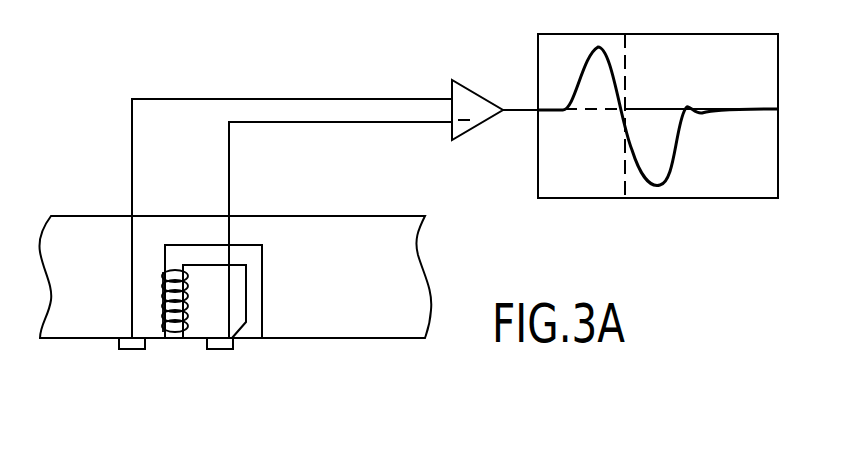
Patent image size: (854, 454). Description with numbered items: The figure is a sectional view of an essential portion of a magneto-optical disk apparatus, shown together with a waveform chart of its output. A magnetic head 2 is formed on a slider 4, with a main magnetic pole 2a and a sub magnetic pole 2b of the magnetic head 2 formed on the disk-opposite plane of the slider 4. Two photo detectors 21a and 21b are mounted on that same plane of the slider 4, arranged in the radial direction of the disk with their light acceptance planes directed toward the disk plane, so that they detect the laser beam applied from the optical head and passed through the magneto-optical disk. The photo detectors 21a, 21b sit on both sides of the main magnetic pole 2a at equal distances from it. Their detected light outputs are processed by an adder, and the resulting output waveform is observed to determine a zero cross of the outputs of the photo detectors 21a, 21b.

The magnetic head 2 is at (209, 250).
The main magnetic pole 2a is at (165, 271).
The sub magnetic pole 2b is at (263, 282).
The slider 4 is at (391, 216).
The photo detector 21a is at (126, 349).
The photo detector 21b is at (218, 349).